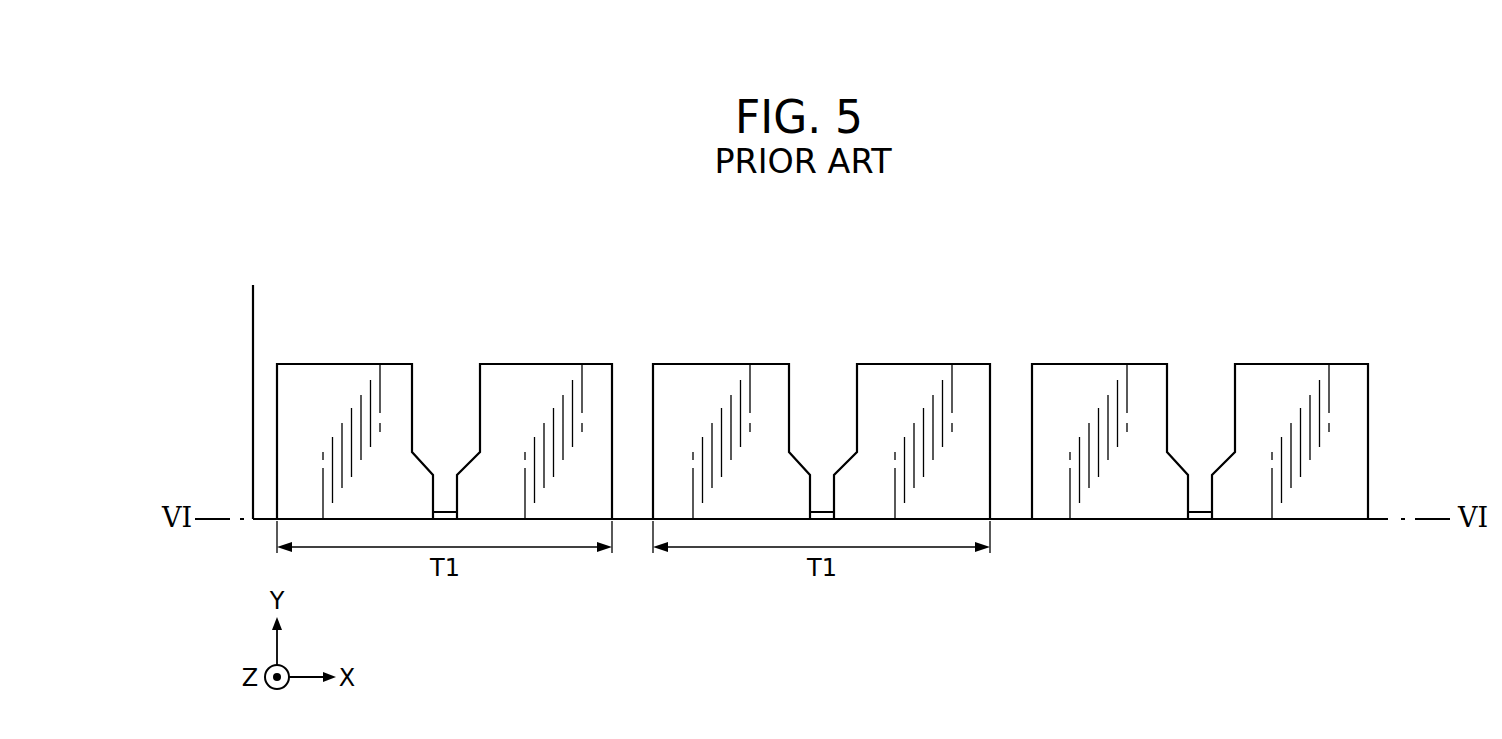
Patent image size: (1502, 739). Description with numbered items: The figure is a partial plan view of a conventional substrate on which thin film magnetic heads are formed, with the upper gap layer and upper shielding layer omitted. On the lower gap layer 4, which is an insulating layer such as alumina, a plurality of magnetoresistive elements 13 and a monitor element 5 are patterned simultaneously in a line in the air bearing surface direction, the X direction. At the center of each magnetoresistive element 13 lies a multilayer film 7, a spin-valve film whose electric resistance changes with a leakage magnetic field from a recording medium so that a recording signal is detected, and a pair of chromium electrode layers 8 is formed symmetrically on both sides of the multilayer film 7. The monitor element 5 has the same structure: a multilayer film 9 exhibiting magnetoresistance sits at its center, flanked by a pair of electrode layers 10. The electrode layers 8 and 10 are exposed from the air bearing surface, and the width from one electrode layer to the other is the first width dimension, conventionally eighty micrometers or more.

The lower gap layer 4 is at (270, 333).
The monitor element 5 is at (444, 398).
The multilayer film 7 is at (822, 512).
The electrode layers 8 is at (738, 380).
The multilayer film 9 is at (443, 512).
The electrode layers 10 is at (357, 380).
The magnetoresistive elements 13 is at (1010, 398).